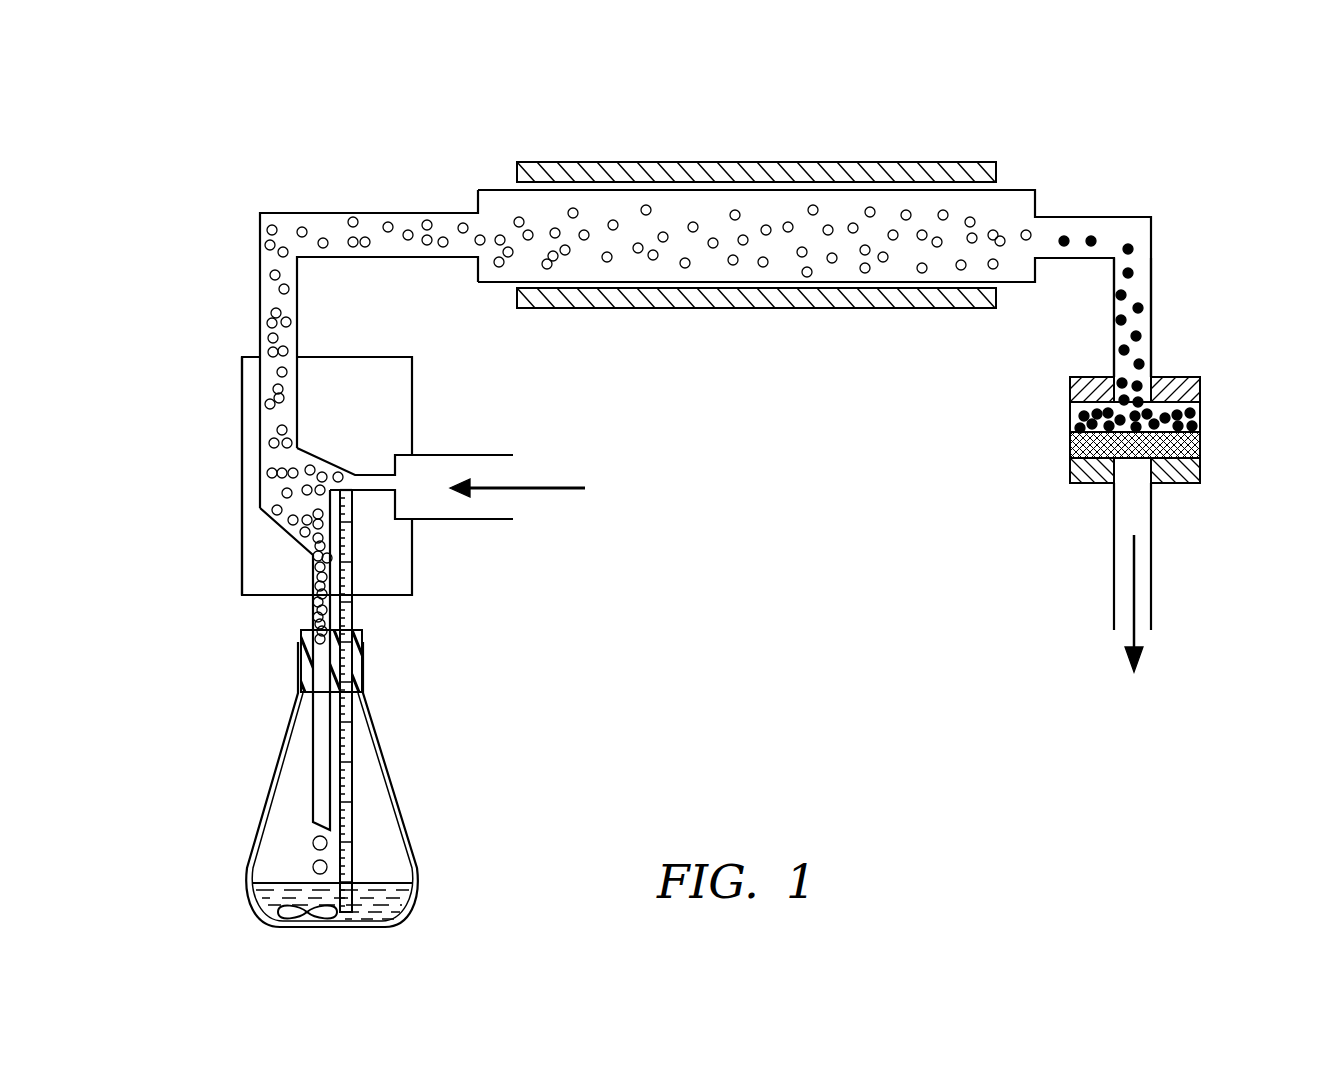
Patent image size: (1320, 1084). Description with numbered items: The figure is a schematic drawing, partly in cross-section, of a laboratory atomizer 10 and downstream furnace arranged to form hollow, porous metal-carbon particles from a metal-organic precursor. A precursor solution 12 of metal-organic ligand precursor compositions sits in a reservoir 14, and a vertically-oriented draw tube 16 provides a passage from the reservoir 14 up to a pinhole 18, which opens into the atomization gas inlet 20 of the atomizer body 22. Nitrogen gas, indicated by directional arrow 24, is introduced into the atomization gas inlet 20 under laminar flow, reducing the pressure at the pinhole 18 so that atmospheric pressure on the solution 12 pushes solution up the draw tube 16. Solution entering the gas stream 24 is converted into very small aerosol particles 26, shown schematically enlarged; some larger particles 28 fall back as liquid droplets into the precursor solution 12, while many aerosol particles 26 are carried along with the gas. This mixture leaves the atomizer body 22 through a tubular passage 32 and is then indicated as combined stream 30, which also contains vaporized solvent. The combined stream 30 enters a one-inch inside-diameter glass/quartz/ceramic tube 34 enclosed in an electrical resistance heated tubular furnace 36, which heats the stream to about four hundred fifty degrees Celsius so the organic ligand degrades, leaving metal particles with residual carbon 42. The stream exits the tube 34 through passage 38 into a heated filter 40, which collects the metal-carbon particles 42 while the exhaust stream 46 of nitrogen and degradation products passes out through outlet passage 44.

The atomizer 10 is at (231, 356).
The precursor solution 12 is at (405, 897).
The reservoir 14 is at (394, 790).
The draw tube 16 is at (354, 750).
The pinhole 18 is at (353, 485).
The atomization gas inlet 20 is at (395, 483).
The atomizer body 22 is at (387, 387).
The atomization gas stream 24 is at (535, 487).
The aerosol particles 26 is at (587, 230).
The larger particles 28 is at (311, 605).
The combined stream 30 is at (323, 218).
The tubular passage 32 is at (392, 212).
The glass/quartz/ceramic tube 34 is at (492, 190).
The tubular furnace 36 is at (820, 162).
The passage 38 is at (1153, 305).
The filter 40 is at (1210, 422).
The metal-carbon particles 42 is at (998, 262).
The outlet passage 44 is at (1112, 537).
The exhaust stream 46 is at (1132, 630).